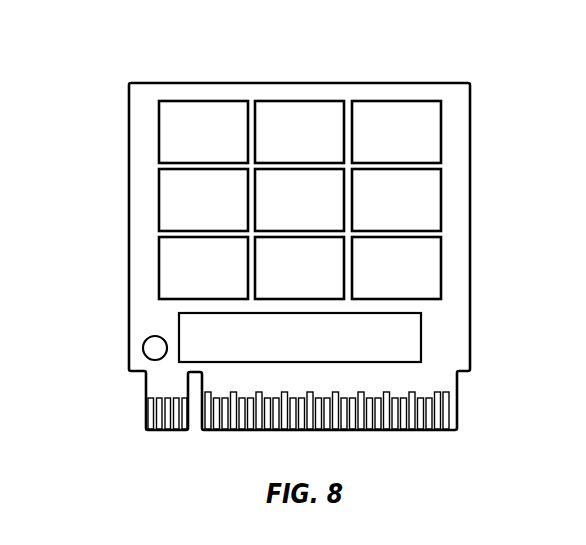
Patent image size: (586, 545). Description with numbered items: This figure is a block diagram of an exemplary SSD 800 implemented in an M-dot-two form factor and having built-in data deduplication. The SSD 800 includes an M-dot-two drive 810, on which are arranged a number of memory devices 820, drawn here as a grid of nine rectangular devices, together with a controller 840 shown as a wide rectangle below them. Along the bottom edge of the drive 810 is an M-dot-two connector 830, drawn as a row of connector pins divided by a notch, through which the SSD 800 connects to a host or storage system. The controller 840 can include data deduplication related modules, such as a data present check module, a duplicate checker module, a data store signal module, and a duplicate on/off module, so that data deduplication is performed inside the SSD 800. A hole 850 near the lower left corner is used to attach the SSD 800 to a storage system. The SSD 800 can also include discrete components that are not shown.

The SSD 800 is at (112, 71).
The M.2 drive 810 is at (129, 207).
The memory devices 820 is at (309, 101).
The M.2 connector 830 is at (152, 415).
The controller 840 is at (418, 335).
The hole 850 is at (143, 354).